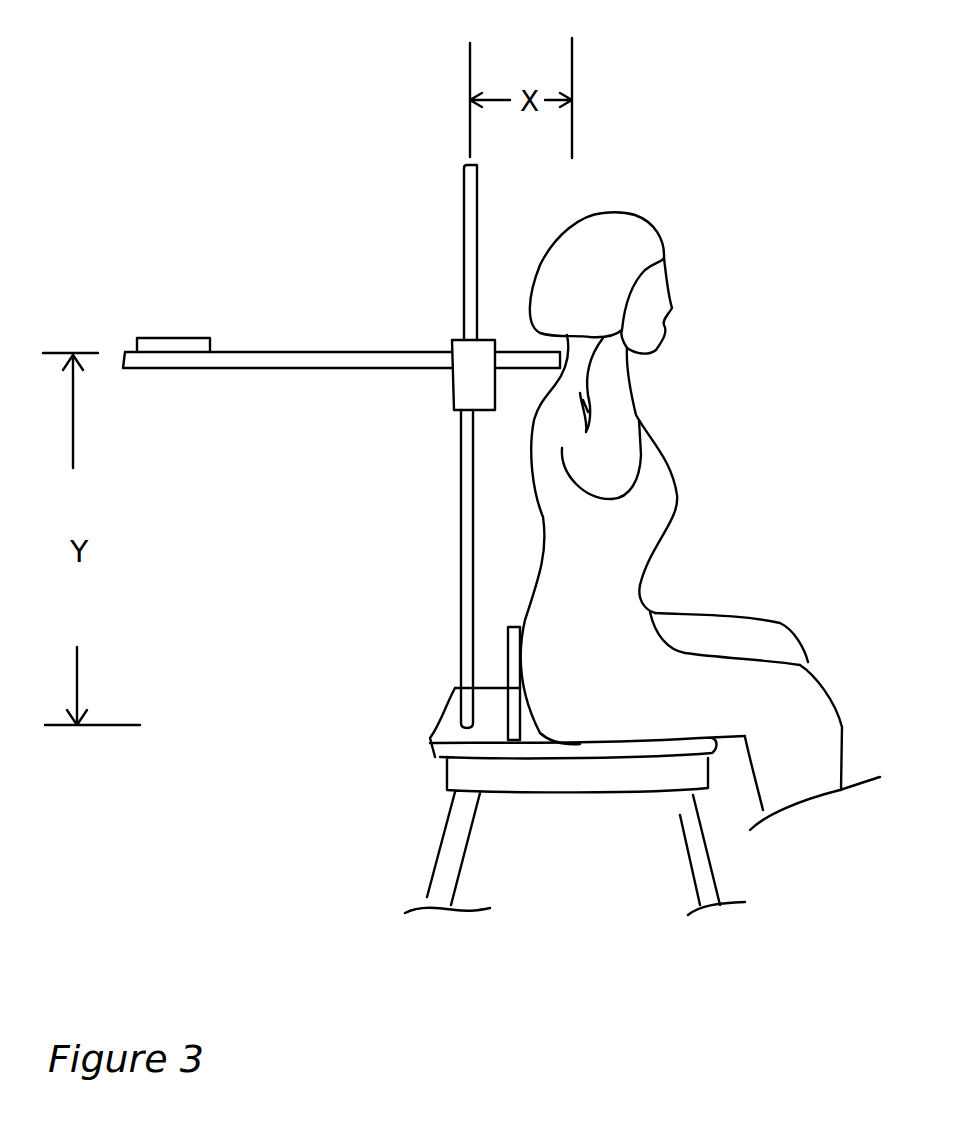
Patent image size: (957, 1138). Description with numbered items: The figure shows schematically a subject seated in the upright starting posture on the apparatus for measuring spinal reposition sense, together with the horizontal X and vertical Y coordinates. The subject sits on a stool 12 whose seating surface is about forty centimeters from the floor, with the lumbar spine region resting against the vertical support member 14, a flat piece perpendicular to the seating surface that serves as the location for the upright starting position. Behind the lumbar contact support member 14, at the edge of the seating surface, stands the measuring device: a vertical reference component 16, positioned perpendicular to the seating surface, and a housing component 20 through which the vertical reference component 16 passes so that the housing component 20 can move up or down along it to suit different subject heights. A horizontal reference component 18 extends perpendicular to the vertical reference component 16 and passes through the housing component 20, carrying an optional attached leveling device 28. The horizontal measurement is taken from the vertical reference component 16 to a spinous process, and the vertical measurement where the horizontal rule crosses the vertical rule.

The stool 12 is at (445, 762).
The vertical support member 14 is at (520, 728).
The vertical reference component 16 is at (460, 233).
The horizontal reference component 18 is at (355, 350).
The housing component 20 is at (446, 397).
The leveling device 28 is at (176, 340).